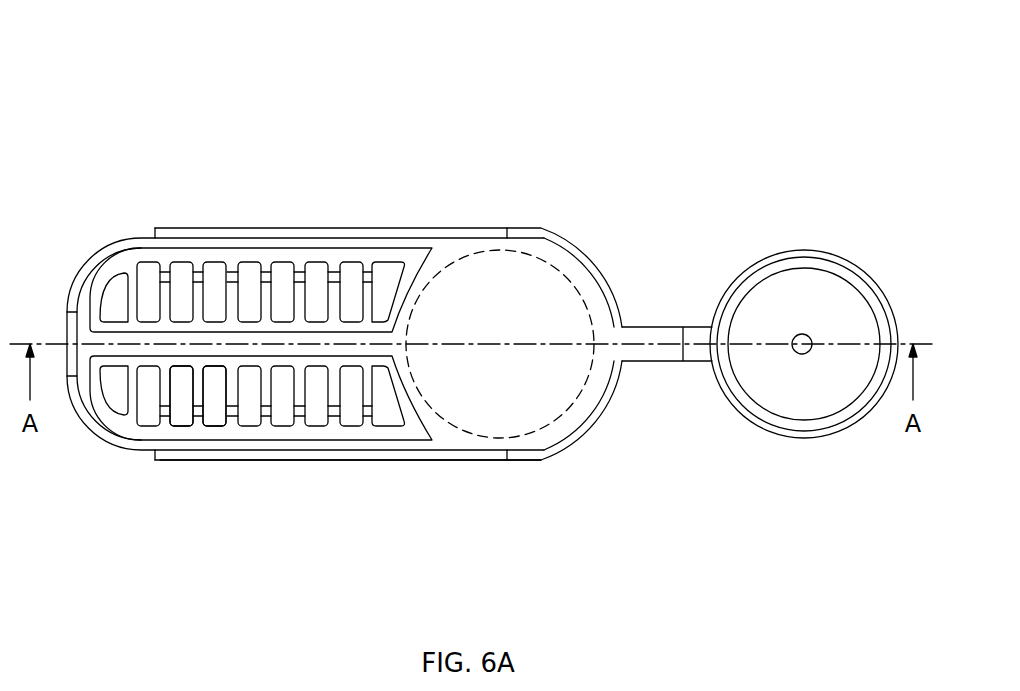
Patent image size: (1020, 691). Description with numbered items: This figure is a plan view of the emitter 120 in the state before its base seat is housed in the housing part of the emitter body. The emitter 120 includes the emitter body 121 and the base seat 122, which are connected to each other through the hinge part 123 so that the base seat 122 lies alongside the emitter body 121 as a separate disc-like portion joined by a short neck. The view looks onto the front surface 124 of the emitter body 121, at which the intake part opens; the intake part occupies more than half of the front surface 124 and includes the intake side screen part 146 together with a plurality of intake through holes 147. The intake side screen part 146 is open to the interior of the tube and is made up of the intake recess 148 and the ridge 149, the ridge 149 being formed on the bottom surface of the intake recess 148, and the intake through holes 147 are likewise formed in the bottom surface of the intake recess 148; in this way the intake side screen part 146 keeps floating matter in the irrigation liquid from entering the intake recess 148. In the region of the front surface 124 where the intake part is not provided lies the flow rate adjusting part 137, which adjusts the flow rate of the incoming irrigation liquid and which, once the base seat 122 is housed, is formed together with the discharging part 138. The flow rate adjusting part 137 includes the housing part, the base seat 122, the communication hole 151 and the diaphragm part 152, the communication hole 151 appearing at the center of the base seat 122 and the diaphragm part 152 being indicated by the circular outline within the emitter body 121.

The emitter 120 is at (494, 294).
The emitter body 121 is at (80, 272).
The base seat 122 is at (860, 268).
The hinge part 123 is at (640, 335).
The front surface 124 is at (452, 442).
The flow rate adjusting part 137 is at (515, 295).
The discharging part 138 is at (787, 295).
The intake side screen part 146 is at (261, 344).
The intake through hole 147 is at (198, 142).
The intake recess 148 is at (283, 268).
The ridge 149 is at (250, 268).
The communication hole 151 is at (800, 354).
The diaphragm part 152 is at (583, 300).